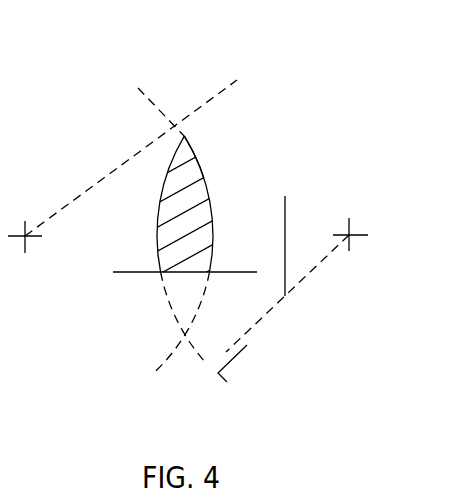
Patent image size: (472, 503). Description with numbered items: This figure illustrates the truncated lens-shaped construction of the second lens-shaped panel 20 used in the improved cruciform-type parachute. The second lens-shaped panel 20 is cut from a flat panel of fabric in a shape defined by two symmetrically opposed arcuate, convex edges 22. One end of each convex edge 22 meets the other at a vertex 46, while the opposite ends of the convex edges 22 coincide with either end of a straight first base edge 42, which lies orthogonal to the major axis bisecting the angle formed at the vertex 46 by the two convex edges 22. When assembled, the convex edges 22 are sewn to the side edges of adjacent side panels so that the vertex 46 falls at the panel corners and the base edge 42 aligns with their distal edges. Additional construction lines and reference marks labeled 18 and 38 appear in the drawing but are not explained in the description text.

The reflective surface 18 is at (247, 345).
The second lens-shaped panel 20 is at (180, 217).
The convex edge 22 is at (204, 178).
The optical axis / center of curvature 38 is at (50, 216).
The first base edge 42 is at (160, 266).
The vertex 46 is at (184, 136).